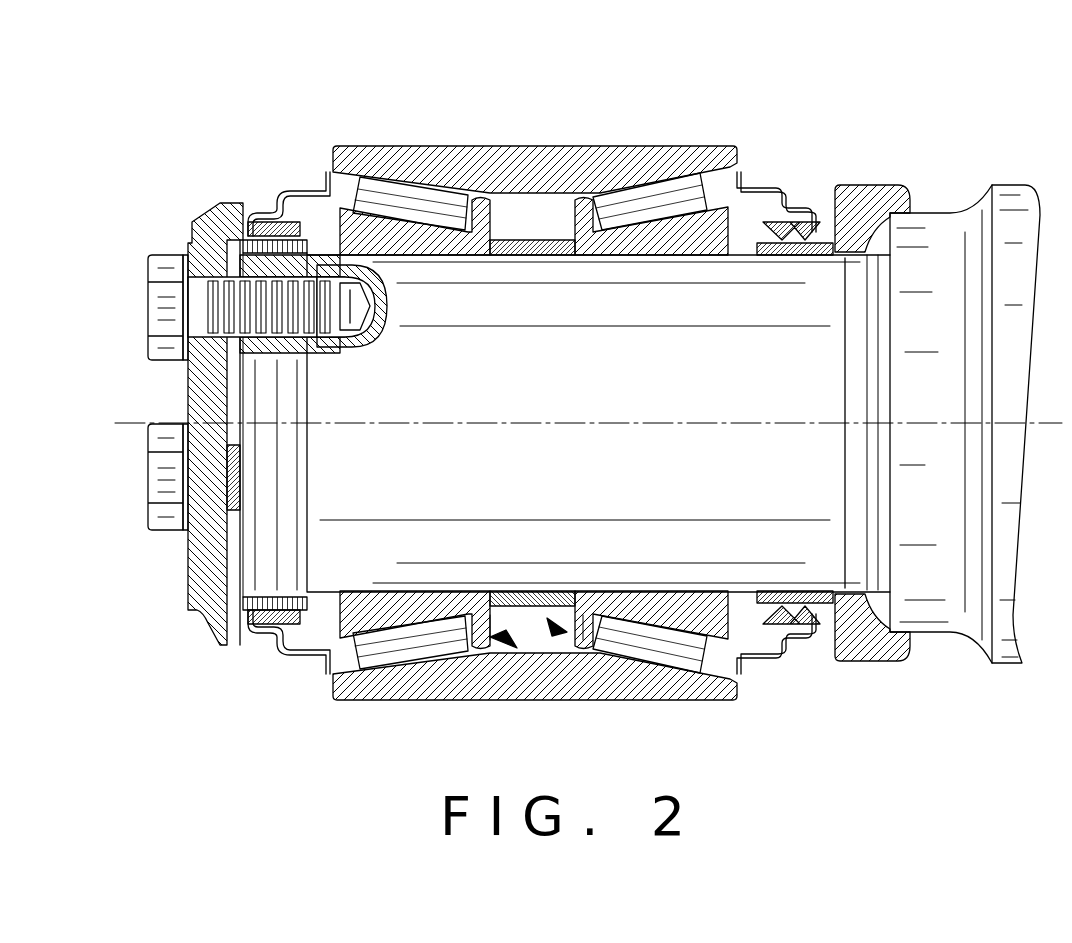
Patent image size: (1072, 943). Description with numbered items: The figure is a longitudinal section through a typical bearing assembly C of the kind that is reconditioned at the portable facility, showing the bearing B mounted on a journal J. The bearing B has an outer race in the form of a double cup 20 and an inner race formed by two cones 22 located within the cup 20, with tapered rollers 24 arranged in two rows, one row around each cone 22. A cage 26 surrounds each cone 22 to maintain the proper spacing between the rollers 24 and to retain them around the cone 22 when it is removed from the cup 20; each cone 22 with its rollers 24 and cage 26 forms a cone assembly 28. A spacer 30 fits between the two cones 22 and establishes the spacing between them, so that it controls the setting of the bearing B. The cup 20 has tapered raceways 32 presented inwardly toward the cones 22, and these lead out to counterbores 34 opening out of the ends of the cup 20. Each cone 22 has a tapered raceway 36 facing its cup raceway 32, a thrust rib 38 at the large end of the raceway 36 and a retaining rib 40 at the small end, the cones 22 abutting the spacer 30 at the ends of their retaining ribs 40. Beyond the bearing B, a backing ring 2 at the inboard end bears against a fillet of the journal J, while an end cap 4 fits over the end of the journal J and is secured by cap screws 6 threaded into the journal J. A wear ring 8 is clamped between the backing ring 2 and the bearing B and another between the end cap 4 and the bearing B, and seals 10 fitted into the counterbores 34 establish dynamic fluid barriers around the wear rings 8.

The backing ring 2 is at (862, 200).
The end cap 4 is at (188, 397).
The cap screws 6 is at (148, 308).
The wear ring 8 is at (263, 597).
The seals 10 is at (262, 198).
The double cup 20 is at (550, 167).
The cones 22 is at (425, 245).
The tapered rollers 24 is at (423, 660).
The cages 26 is at (353, 675).
The cone assembly 28 is at (560, 628).
The spacer 30 is at (518, 250).
The tapered raceways 32 is at (405, 195).
The counterbores 34 is at (325, 182).
The tapered raceway 36 is at (420, 640).
The thrust rib 38 is at (328, 676).
The retaining rib 40 is at (490, 632).
The bearing B is at (511, 141).
The bearing assembly C is at (178, 146).
The journal J is at (644, 393).